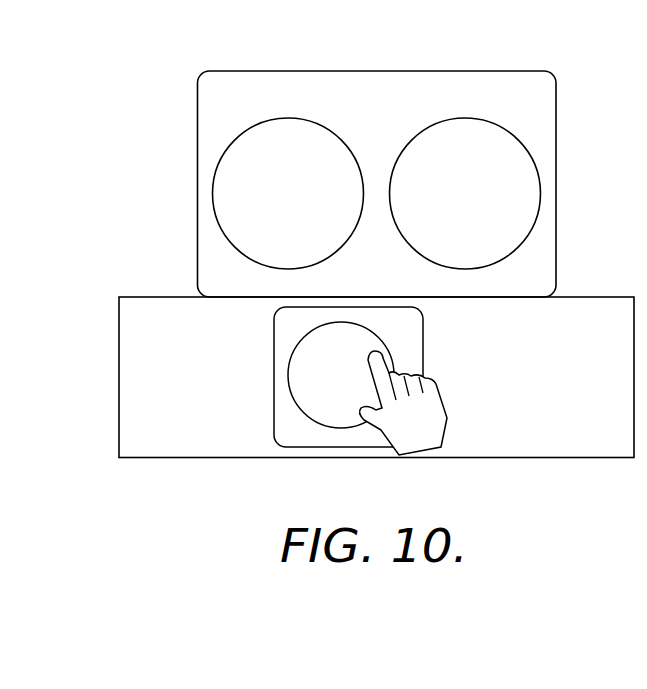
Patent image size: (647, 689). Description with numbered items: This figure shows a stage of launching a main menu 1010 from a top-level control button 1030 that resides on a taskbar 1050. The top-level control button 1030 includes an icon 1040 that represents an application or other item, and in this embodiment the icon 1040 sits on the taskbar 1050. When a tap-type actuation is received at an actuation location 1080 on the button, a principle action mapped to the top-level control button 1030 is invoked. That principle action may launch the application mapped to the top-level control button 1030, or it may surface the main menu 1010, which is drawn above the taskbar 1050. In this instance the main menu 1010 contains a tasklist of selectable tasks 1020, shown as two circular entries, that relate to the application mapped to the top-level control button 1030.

The main menu 1010 is at (197, 125).
The selectable tasks 1020 is at (402, 148).
The top-level control button 1030 is at (278, 446).
The icon 1040 is at (323, 430).
The taskbar 1050 is at (119, 350).
The actuation location 1080 is at (433, 452).